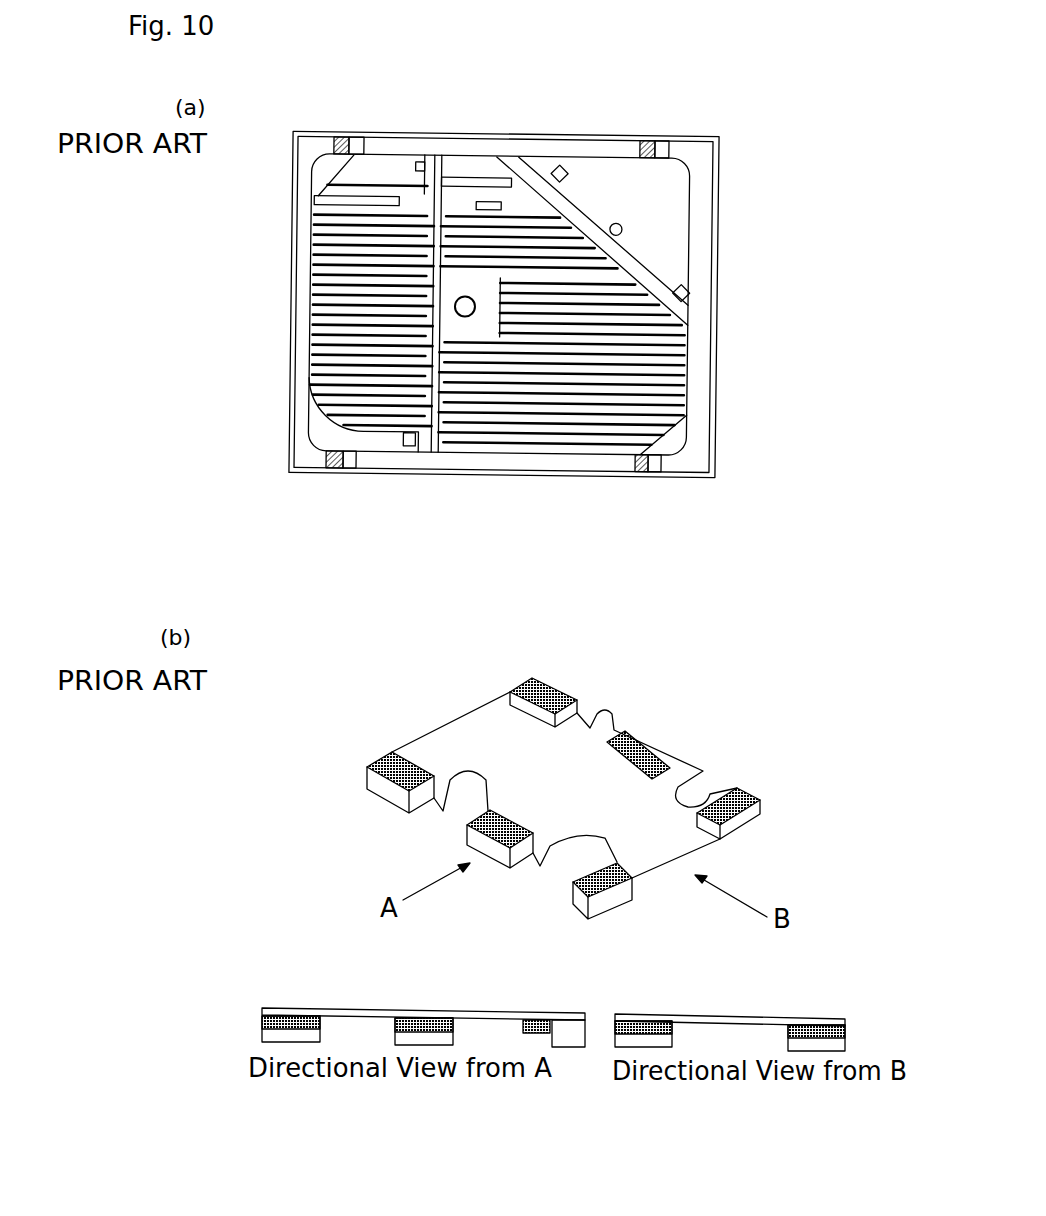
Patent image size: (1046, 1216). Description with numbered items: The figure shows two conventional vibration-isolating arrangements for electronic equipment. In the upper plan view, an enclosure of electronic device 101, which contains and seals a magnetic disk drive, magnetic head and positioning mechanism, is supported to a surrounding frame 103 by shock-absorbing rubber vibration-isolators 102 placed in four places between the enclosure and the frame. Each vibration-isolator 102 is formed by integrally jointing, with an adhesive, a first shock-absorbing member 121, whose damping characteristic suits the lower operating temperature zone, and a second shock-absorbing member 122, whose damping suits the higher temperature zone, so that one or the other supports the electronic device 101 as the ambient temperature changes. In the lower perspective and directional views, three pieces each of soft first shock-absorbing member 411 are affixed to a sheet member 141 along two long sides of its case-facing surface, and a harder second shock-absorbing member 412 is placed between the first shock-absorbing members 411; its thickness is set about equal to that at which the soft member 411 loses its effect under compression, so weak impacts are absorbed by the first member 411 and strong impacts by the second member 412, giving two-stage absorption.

The electronic device 101 is at (481, 168).
The shock-absorbing rubber vibration-isolator 102 is at (504, 280).
The frame 103 is at (601, 132).
The first shock-absorbing member 121 is at (387, 113).
The second shock-absorbing member 122 is at (331, 145).
The sheet member 141 is at (443, 737).
The first shock-absorbing member 411 is at (653, 740).
The second shock-absorbing member 412 is at (517, 682).